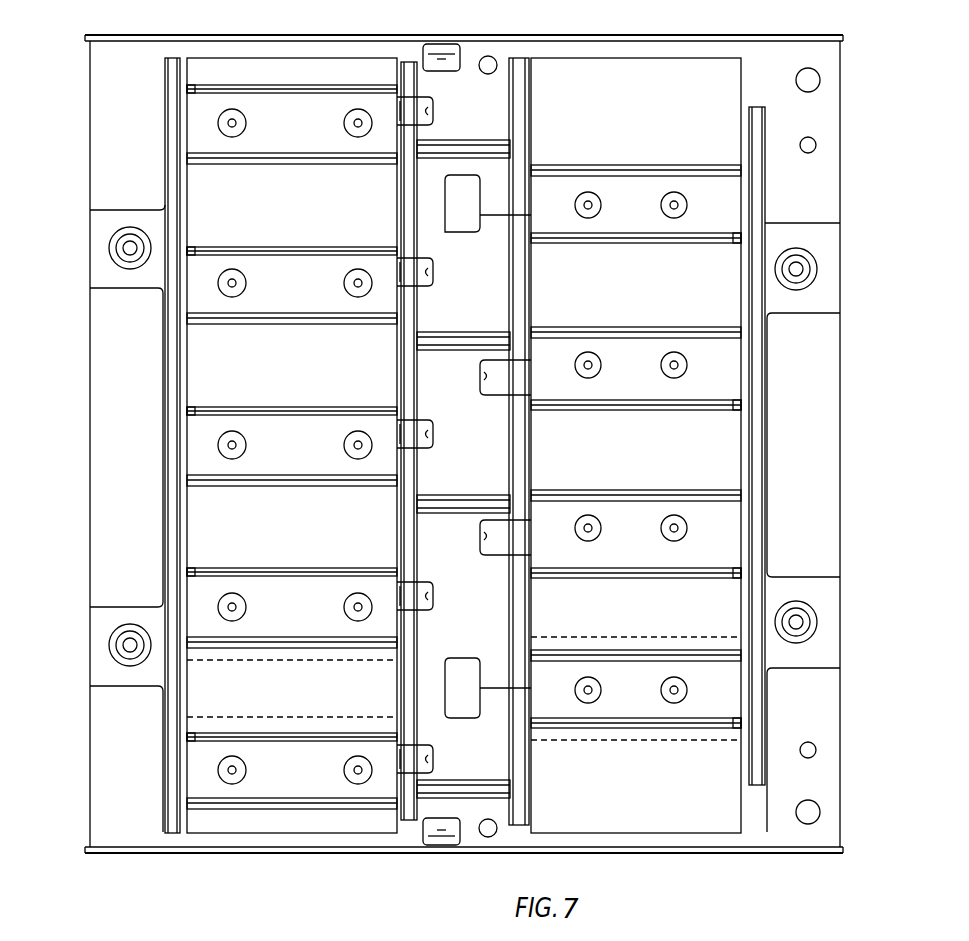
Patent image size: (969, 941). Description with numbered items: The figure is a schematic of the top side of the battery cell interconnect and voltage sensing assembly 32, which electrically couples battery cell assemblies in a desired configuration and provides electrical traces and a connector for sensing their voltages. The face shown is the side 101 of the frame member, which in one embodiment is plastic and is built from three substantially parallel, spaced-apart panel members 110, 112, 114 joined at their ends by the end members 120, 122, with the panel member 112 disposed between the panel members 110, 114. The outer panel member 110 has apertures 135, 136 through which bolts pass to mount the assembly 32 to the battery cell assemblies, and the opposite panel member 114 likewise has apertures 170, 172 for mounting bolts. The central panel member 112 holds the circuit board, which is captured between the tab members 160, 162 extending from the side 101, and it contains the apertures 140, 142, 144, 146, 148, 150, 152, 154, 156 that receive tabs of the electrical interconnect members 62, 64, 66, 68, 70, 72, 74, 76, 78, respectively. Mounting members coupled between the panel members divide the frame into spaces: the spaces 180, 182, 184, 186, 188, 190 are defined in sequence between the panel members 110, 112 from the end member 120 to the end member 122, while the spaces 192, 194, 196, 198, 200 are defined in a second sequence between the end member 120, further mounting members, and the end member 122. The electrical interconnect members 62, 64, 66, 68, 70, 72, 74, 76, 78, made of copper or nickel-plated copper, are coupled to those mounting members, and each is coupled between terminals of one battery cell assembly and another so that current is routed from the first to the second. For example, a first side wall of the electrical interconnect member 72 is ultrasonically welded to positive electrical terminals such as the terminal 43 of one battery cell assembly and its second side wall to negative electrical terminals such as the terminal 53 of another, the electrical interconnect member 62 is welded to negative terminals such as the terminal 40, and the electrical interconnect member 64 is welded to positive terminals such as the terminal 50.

The battery cell interconnect and voltage sensing assembly 32 is at (853, 118).
The negative electrical terminal 40 is at (253, 722).
The positive electrical terminal 43 is at (655, 735).
The positive electrical terminal 50 is at (312, 652).
The negative electrical terminal 53 is at (595, 642).
The electrical interconnect member 62 is at (250, 806).
The electrical interconnect member 64 is at (250, 568).
The electrical interconnect member 66 is at (252, 487).
The electrical interconnect member 68 is at (252, 326).
The electrical interconnect member 70 is at (252, 165).
The electrical interconnect member 72 is at (590, 732).
The electrical interconnect member 74 is at (600, 579).
The electrical interconnect member 76 is at (585, 413).
The electrical interconnect member 78 is at (585, 246).
The side 101 is at (805, 412).
The panel member 110 is at (108, 765).
The panel member 112 is at (500, 758).
The panel member 114 is at (822, 778).
The end member 120 is at (630, 836).
The end member 122 is at (580, 48).
The aperture 135 is at (128, 645).
The aperture 136 is at (128, 248).
The aperture 140 is at (440, 760).
The aperture 142 is at (440, 590).
The aperture 144 is at (440, 434).
The aperture 146 is at (440, 270).
The aperture 148 is at (433, 110).
The aperture 150 is at (462, 660).
The aperture 152 is at (485, 537).
The aperture 154 is at (490, 382).
The aperture 156 is at (450, 202).
The tab member 160 is at (440, 835).
The tab member 162 is at (448, 54).
The aperture 170 is at (798, 622).
The aperture 172 is at (798, 269).
The space 180 is at (295, 797).
The space 182 is at (292, 655).
The space 184 is at (295, 484).
The space 186 is at (292, 342).
The space 188 is at (292, 182).
The space 190 is at (292, 445).
The space 192 is at (636, 746).
The space 194 is at (636, 588).
The space 196 is at (636, 426).
The space 198 is at (636, 265).
The space 200 is at (636, 445).